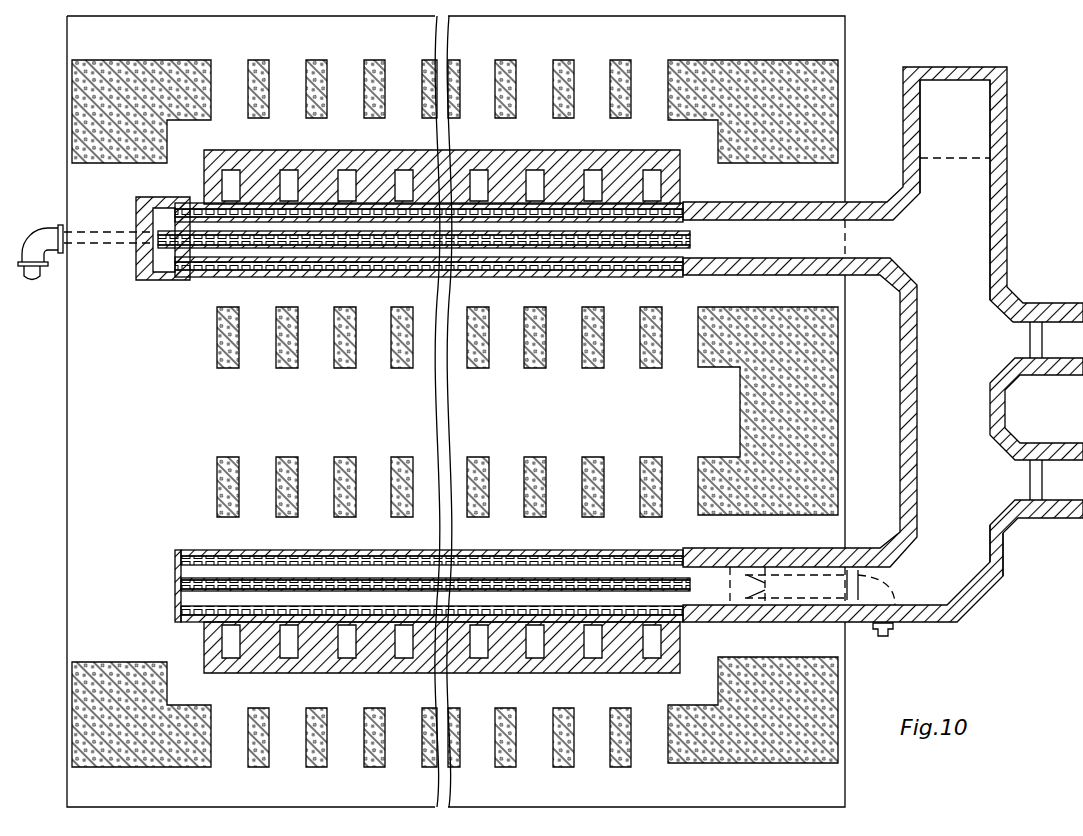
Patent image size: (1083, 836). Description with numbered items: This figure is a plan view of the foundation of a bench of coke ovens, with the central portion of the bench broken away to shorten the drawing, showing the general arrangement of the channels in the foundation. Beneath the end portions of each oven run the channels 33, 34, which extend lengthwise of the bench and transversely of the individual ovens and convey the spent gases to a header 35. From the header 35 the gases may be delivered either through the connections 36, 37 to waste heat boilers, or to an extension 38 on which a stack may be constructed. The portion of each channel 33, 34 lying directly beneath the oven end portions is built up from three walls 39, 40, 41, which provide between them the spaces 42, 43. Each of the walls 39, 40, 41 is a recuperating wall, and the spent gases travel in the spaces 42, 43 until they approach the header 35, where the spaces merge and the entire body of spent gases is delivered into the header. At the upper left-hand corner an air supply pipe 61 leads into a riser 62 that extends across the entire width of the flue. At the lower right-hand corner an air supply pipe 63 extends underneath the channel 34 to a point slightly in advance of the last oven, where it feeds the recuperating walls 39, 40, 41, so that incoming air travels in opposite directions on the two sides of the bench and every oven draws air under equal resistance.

The channel 33 is at (863, 227).
The channel 34 is at (825, 600).
The header 35 is at (940, 383).
The connection 36 is at (1063, 320).
The connection 37 is at (1060, 490).
The extension 38 is at (977, 120).
The recuperating wall 39 is at (187, 207).
The recuperating wall 40 is at (178, 240).
The recuperating wall 41 is at (182, 275).
The space 42 is at (192, 216).
The space 43 is at (190, 257).
The air supply pipe 61 is at (38, 247).
The riser 62 is at (148, 230).
The air supply pipe 63 is at (893, 625).